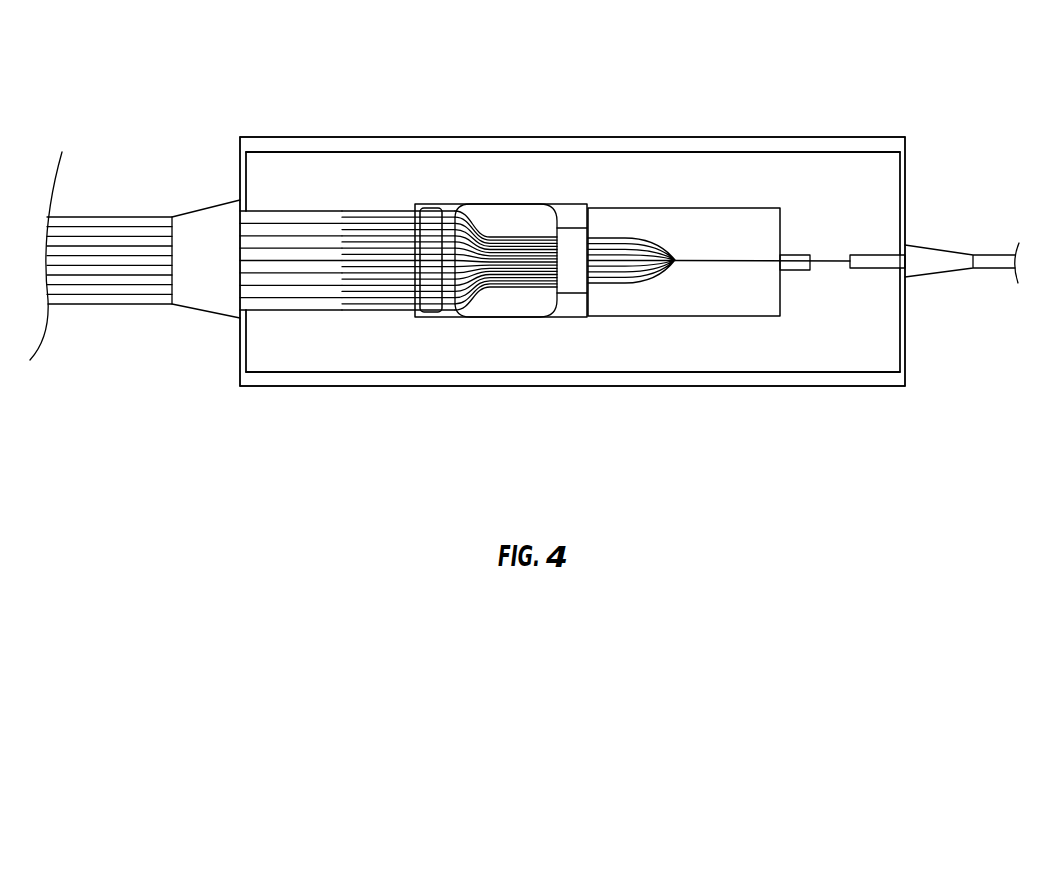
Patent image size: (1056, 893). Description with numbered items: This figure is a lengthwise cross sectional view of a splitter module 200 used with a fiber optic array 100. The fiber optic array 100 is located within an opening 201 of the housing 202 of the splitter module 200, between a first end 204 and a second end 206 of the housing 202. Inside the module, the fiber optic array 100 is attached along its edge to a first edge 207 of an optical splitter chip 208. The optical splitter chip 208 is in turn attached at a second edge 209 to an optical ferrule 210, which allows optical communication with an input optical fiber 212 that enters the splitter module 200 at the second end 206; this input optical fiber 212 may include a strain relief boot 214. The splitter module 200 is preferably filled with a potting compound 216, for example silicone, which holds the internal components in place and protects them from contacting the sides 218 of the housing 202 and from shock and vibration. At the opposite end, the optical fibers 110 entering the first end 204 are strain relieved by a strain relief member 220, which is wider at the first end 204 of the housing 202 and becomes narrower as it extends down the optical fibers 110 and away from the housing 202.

The fiber optic array 100 is at (458, 313).
The optical fibers 110 is at (118, 305).
The splitter module 200 is at (504, 117).
The opening 201 is at (867, 168).
The housing 202 is at (885, 387).
The first end 204 is at (238, 348).
The second end 206 is at (905, 378).
The first edge 207 is at (597, 317).
The optical splitter chip 208 is at (700, 317).
The second edge 209 is at (788, 292).
The optical ferrule 210 is at (806, 270).
The input optical fiber 212 is at (835, 272).
The strain relief boot 214 is at (948, 262).
The potting compound 216 is at (905, 182).
The sides 218 is at (748, 145).
The strain relief member 220 is at (230, 316).